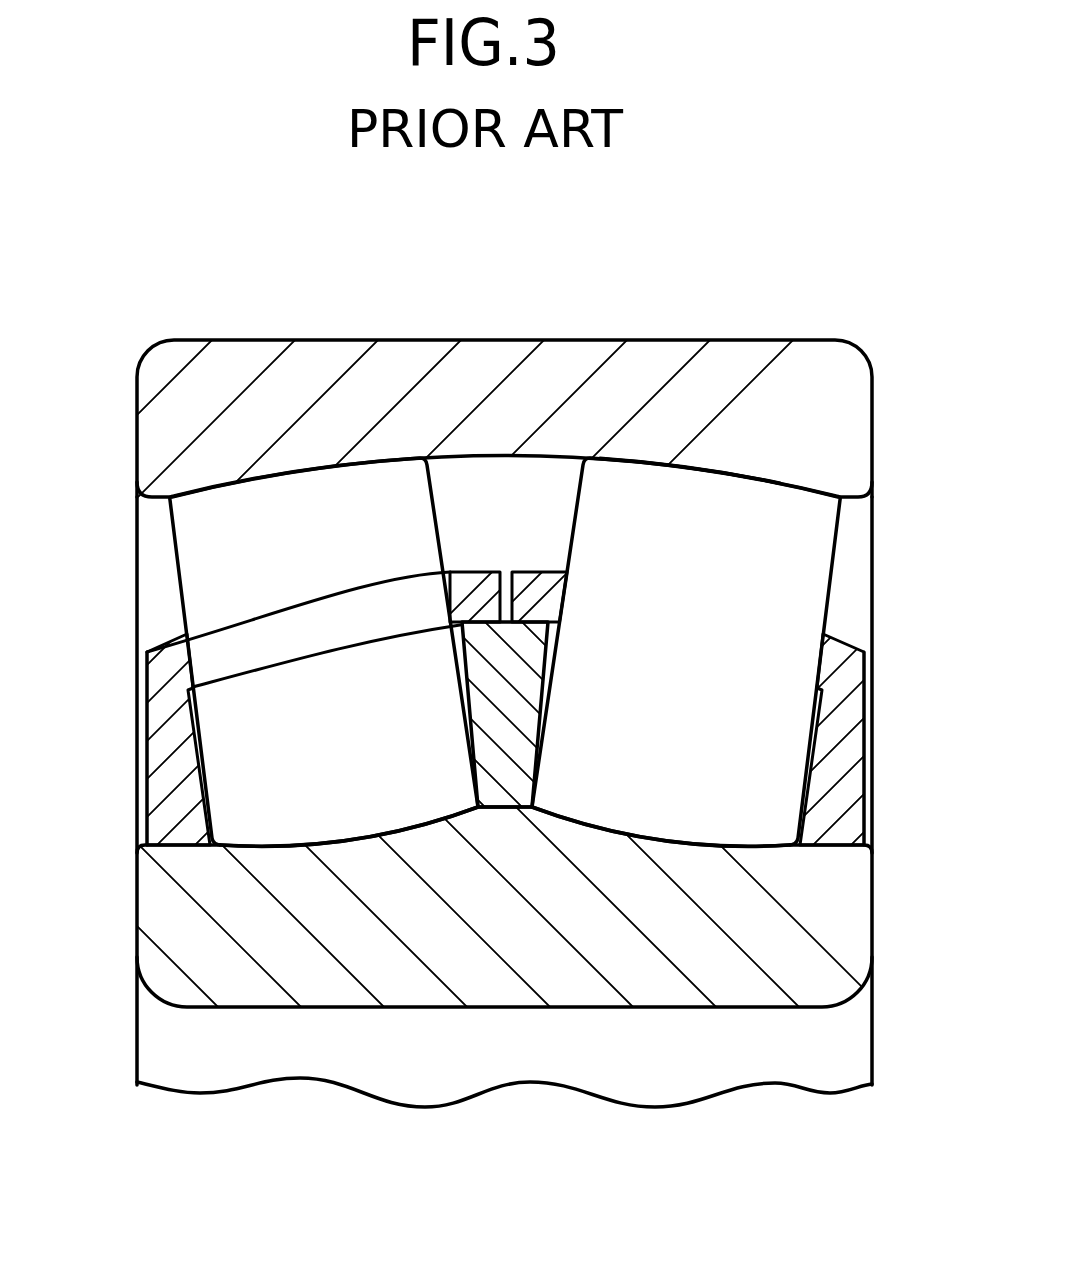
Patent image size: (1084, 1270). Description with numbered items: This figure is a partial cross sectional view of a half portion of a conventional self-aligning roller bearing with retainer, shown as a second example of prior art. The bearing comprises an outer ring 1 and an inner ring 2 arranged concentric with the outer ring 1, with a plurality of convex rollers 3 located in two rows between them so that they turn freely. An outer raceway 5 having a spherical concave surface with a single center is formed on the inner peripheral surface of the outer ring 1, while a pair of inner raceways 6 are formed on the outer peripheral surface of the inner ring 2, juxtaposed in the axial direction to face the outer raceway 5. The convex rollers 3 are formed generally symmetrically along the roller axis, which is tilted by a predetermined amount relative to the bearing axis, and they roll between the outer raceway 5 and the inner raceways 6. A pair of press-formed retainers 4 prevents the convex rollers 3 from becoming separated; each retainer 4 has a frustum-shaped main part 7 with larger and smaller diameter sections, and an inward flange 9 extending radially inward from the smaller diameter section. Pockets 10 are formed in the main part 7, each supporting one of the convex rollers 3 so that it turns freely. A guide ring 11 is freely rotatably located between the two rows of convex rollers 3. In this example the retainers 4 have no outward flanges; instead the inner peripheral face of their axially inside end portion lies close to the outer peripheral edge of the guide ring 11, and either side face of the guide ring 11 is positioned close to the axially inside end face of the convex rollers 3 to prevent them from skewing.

The outer ring 1 is at (832, 424).
The inner ring 2 is at (822, 973).
The convex rollers 3 is at (192, 538).
The retainers 4 is at (163, 673).
The outer raceway 5 is at (691, 469).
The inner raceways 6 is at (292, 843).
The main part 7 is at (257, 622).
The inward flange 9 is at (167, 797).
The pockets 10 is at (443, 598).
The guide ring 11 is at (513, 758).